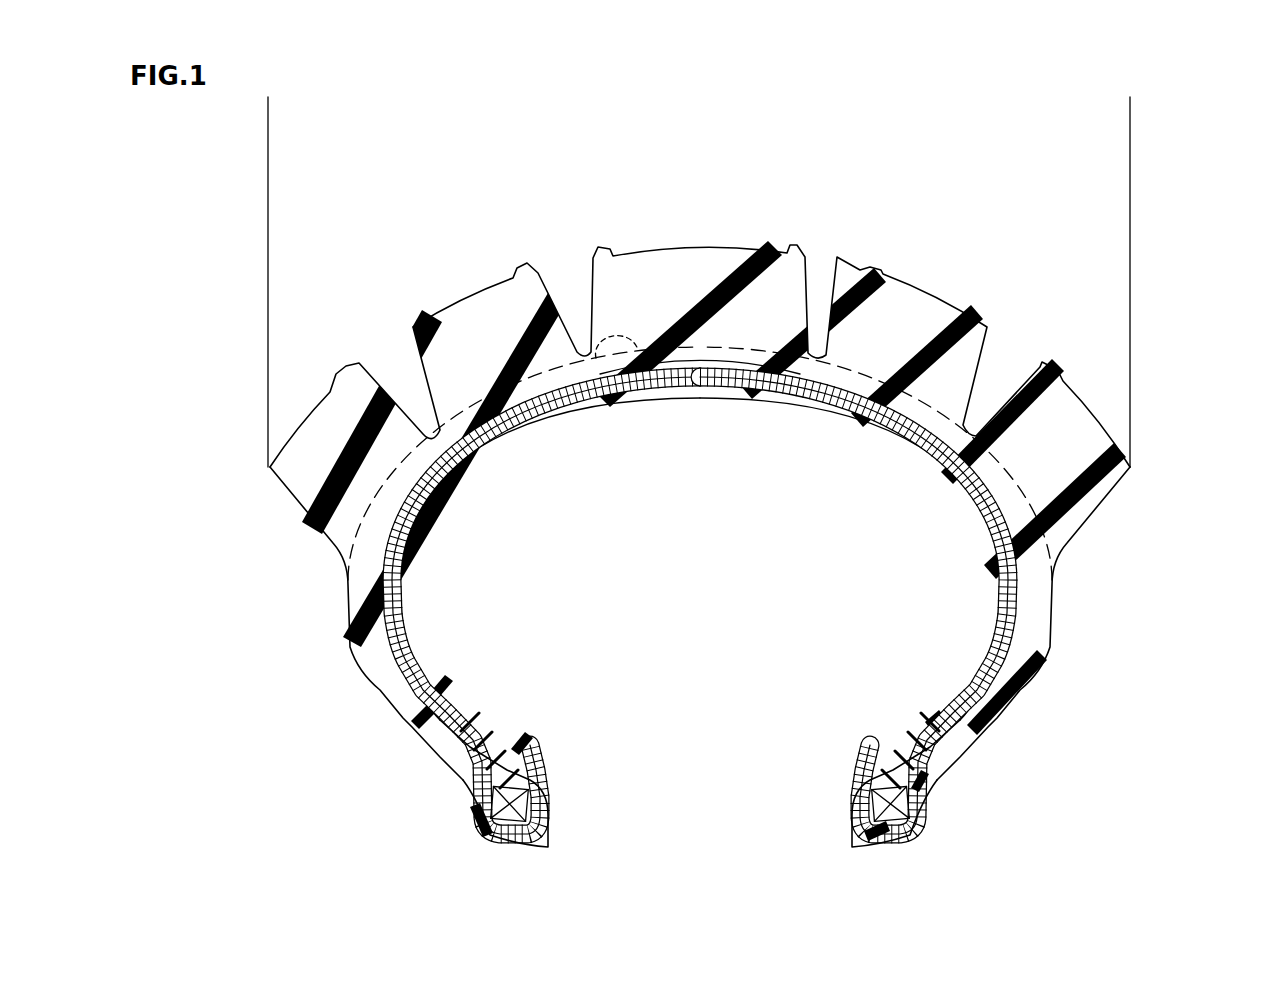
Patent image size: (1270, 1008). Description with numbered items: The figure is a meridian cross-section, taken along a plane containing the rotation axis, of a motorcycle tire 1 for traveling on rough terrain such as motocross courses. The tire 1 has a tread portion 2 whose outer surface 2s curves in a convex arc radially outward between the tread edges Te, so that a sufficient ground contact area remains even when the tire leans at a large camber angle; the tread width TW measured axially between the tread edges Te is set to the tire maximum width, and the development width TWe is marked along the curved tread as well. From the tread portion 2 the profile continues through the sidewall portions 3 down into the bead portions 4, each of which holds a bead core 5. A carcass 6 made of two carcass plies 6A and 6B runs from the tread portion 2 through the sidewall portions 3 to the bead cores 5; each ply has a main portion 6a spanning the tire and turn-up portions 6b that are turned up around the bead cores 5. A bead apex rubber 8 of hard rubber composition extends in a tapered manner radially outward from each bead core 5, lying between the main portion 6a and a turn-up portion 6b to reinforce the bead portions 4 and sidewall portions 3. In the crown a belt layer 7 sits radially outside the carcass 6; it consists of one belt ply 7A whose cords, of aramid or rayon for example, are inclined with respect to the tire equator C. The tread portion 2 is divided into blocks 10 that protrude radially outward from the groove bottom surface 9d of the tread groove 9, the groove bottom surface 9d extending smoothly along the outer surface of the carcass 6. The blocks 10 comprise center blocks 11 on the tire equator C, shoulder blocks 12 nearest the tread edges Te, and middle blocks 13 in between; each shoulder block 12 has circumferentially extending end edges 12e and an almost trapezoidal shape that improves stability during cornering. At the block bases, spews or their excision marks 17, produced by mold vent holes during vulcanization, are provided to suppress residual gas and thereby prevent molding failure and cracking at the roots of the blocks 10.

The motorcycle tire 1 is at (701, 469).
The tread portion 2 is at (701, 397).
The outer surface 2s is at (447, 310).
The sidewall portions 3 is at (331, 623).
The bead portions 4 is at (699, 770).
The bead cores 5 is at (510, 805).
The carcass 6 is at (646, 605).
The carcass ply 6A is at (413, 497).
The carcass ply 6B is at (510, 410).
The main portion 6a is at (990, 650).
The turn-up portions 6b is at (980, 690).
The belt layer 7 is at (700, 429).
The belt ply 7A is at (740, 372).
The bead apex rubber 8 is at (500, 757).
The tread groove 9 is at (826, 323).
The groove bottom surface 9d is at (591, 368).
The blocks 10 is at (701, 415).
The center blocks 11 is at (668, 268).
The shoulder blocks 12 is at (315, 430).
The end edges 12e is at (270, 462).
The middle blocks 13 is at (484, 315).
The spew or excision mark 17 is at (347, 366).
The tread width TW is at (268, 103).
The tread development width TWe is at (268, 287).
The tread edges Te is at (701, 439).
The tire equator C is at (698, 407).